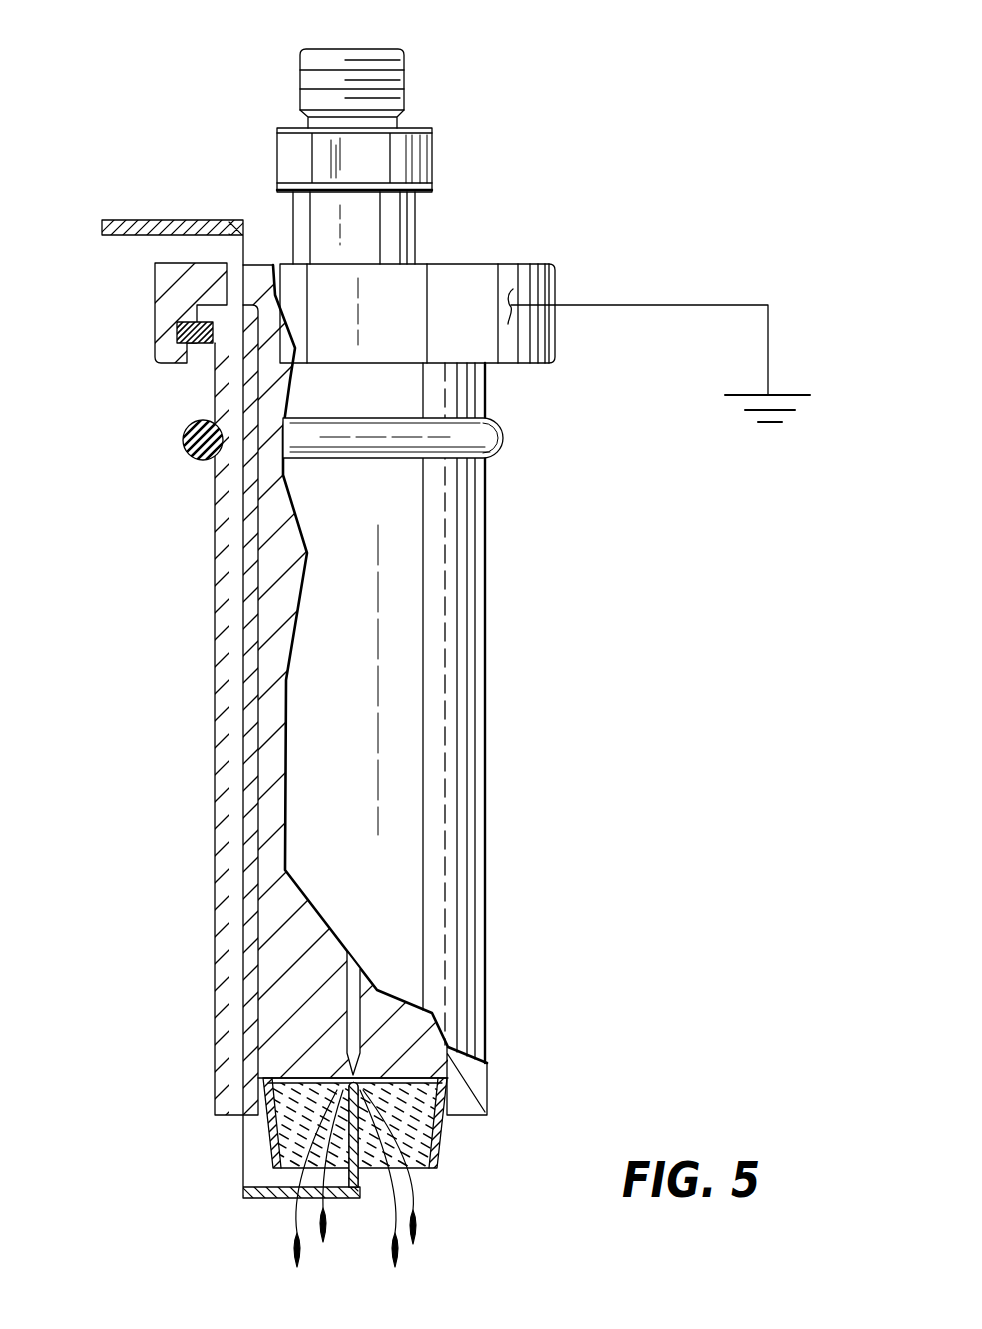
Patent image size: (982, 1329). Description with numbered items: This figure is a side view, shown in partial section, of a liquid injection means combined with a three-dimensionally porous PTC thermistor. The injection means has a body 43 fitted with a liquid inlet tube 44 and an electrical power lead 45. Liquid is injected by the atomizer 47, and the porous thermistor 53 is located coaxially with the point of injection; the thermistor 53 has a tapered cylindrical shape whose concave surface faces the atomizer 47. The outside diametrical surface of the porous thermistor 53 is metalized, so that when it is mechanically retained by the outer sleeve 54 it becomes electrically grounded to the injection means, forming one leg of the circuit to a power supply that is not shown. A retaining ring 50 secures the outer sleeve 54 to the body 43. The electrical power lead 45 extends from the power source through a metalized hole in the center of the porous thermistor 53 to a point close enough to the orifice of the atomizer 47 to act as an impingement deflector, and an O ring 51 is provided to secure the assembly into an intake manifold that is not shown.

The body 43 is at (460, 270).
The liquid inlet tube 44 is at (367, 47).
The electrical power lead 45 is at (125, 220).
The atomizer 47 is at (352, 973).
The retaining ring 50 is at (184, 332).
The O ring 51 is at (189, 430).
The porous thermistor 53 is at (435, 1127).
The outer sleeve 54 is at (216, 1087).